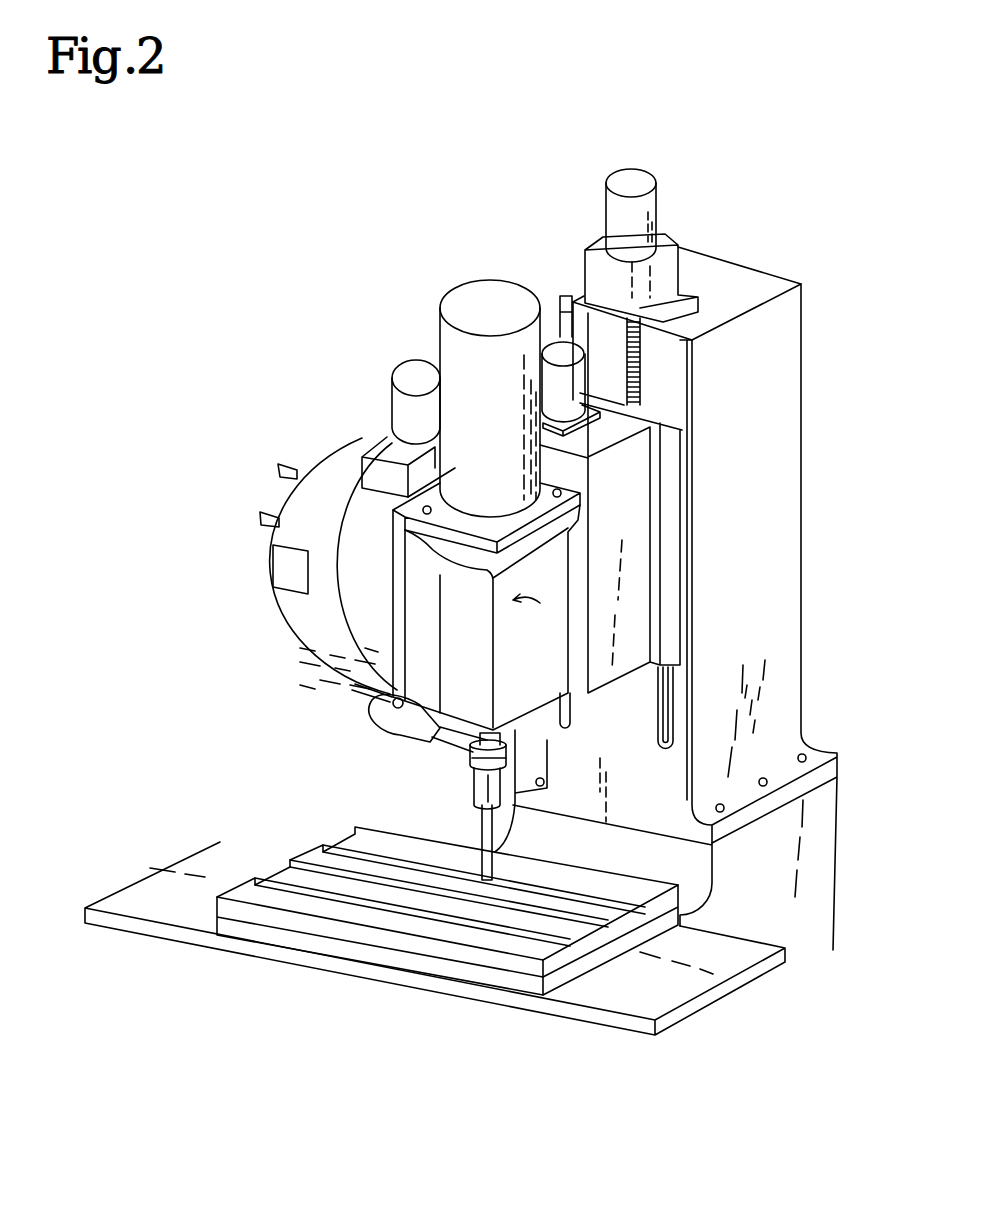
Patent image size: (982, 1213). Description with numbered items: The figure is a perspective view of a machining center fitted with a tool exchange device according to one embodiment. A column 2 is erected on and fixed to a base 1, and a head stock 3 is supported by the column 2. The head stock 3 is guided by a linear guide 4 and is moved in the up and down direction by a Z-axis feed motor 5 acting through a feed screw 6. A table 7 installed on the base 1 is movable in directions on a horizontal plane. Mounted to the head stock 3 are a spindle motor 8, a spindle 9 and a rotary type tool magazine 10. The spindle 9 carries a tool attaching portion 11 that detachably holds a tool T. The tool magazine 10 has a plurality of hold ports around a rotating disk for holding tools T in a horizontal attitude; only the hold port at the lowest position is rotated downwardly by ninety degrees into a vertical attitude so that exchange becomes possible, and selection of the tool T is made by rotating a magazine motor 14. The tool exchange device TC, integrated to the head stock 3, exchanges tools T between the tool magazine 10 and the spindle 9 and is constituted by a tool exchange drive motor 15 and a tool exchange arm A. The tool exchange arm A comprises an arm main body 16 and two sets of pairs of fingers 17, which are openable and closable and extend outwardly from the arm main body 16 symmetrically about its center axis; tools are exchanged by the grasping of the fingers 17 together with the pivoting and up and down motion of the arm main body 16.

The base 1 is at (817, 864).
The column 2 is at (702, 265).
The head stock 3 is at (636, 588).
The linear guide 4 is at (568, 298).
The Z-axis feed motor 5 is at (640, 178).
The feed screw 6 is at (670, 333).
The table 7 is at (252, 897).
The spindle motor 8 is at (460, 345).
The spindle 9 is at (530, 731).
The rotary type tool magazine 10 is at (288, 602).
The tool attaching portion 11 is at (515, 746).
The magazine motor 14 is at (413, 412).
The tool exchange drive motor 15 is at (562, 384).
The tool exchange arm main body 16 is at (398, 728).
The pairs of fingers 17 is at (357, 690).
The tool T is at (473, 792).
The tool exchange device TC is at (540, 600).
The tool exchange arm A is at (357, 722).